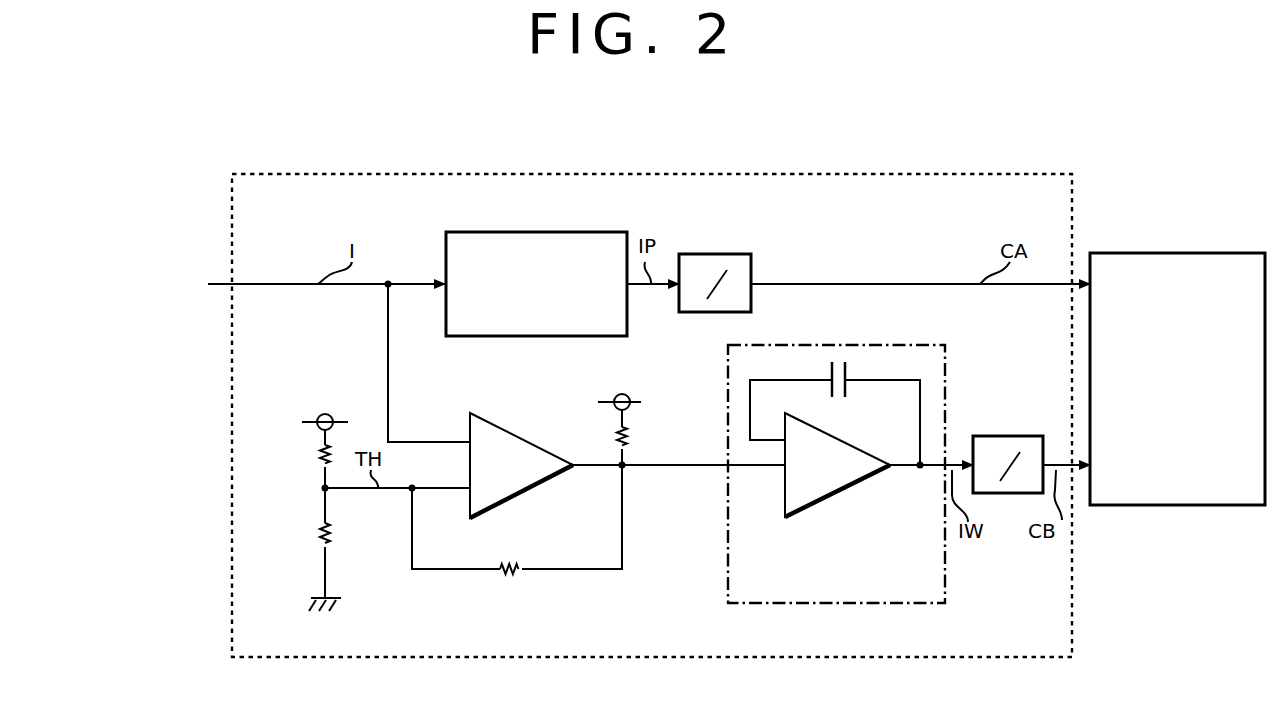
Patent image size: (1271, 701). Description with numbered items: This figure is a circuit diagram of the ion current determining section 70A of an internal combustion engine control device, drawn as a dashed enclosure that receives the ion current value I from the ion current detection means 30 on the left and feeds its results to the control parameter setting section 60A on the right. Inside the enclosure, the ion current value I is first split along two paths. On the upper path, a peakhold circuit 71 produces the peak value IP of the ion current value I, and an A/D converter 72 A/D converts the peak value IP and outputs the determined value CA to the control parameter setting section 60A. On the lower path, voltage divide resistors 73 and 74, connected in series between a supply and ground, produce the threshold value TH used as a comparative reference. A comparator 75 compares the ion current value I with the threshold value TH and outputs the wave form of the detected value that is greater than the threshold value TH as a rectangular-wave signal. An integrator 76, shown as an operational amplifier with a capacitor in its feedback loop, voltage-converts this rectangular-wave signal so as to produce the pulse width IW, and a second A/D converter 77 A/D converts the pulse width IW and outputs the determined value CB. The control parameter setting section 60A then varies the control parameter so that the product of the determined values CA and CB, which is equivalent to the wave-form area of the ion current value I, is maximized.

The ion current detection means 30 is at (253, 285).
The control parameter setting section 60A is at (1160, 253).
The ion current determining section 70A is at (793, 174).
The peakhold circuit 71 is at (555, 232).
The A/D converter 72 is at (735, 254).
The voltage divide resistor 73 is at (318, 455).
The voltage divide resistor 74 is at (318, 535).
The comparator 75 is at (515, 437).
The integrator 76 is at (865, 603).
The A/D converter 77 is at (998, 436).